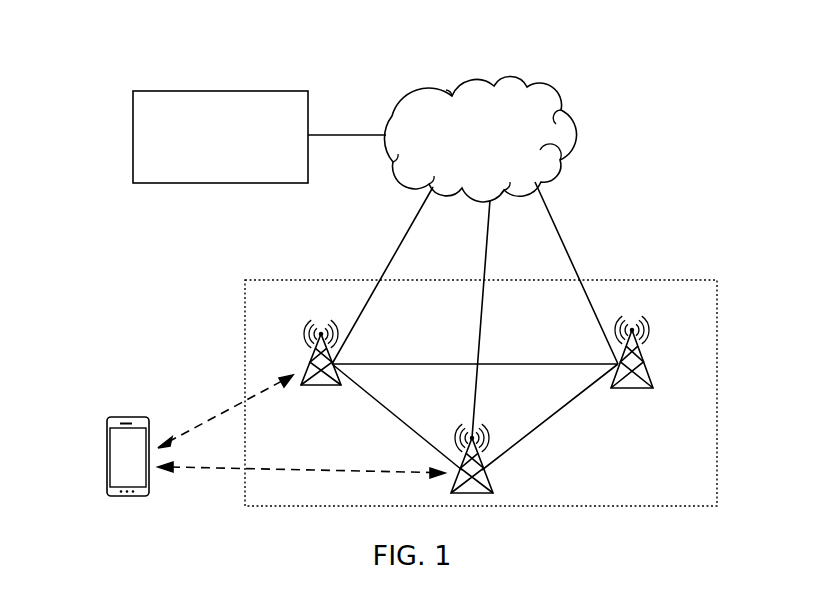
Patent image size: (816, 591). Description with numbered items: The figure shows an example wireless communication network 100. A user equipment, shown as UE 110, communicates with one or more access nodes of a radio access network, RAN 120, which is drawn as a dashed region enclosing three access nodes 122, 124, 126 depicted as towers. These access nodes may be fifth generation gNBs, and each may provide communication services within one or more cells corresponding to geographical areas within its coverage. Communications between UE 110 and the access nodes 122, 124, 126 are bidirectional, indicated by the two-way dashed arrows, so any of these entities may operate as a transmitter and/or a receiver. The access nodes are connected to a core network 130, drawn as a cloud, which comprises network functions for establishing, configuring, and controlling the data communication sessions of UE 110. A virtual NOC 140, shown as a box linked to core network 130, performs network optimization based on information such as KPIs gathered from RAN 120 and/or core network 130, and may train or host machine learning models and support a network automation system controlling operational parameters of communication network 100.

The communication network 100 is at (125, 45).
The UE 110 is at (129, 417).
The radio access network 120 is at (683, 280).
The access node 122 is at (312, 360).
The access node 124 is at (491, 475).
The access node 126 is at (650, 364).
The core network 130 is at (495, 85).
The virtual NOC 140 is at (217, 91).